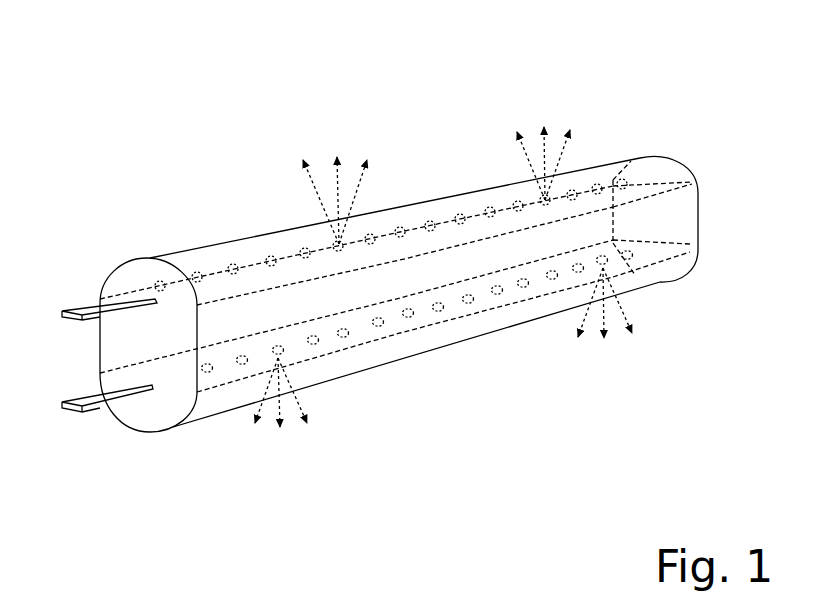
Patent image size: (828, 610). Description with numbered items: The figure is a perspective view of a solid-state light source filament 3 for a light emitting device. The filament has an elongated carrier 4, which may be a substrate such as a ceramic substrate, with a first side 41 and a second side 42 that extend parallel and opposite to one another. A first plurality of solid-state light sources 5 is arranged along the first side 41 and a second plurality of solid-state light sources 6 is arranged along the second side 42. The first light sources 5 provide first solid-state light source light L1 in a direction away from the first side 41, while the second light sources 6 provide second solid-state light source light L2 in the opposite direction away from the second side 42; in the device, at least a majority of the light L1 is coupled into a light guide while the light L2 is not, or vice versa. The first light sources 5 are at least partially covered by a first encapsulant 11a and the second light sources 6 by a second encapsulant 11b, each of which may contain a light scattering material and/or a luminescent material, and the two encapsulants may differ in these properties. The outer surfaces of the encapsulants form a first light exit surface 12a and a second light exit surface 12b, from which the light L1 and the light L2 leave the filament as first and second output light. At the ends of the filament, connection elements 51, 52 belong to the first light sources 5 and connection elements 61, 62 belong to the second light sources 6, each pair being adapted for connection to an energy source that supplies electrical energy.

The solid-state light source filament 3 is at (412, 283).
The carrier 4 is at (413, 331).
The first plurality of solid-state light sources 5 is at (308, 257).
The second plurality of solid-state light sources 6 is at (313, 337).
The first encapsulant 11a is at (132, 266).
The second encapsulant 11b is at (170, 410).
The first light exit surface 12a is at (198, 247).
The second light exit surface 12b is at (213, 413).
The first side 41 is at (510, 230).
The second side 42 is at (527, 300).
The connection element 51 is at (673, 180).
The connection element 52 is at (100, 303).
The connection element 61 is at (673, 243).
The connection element 62 is at (107, 407).
The first solid-state light source light L1 is at (343, 228).
The second solid-state light source light L2 is at (285, 372).